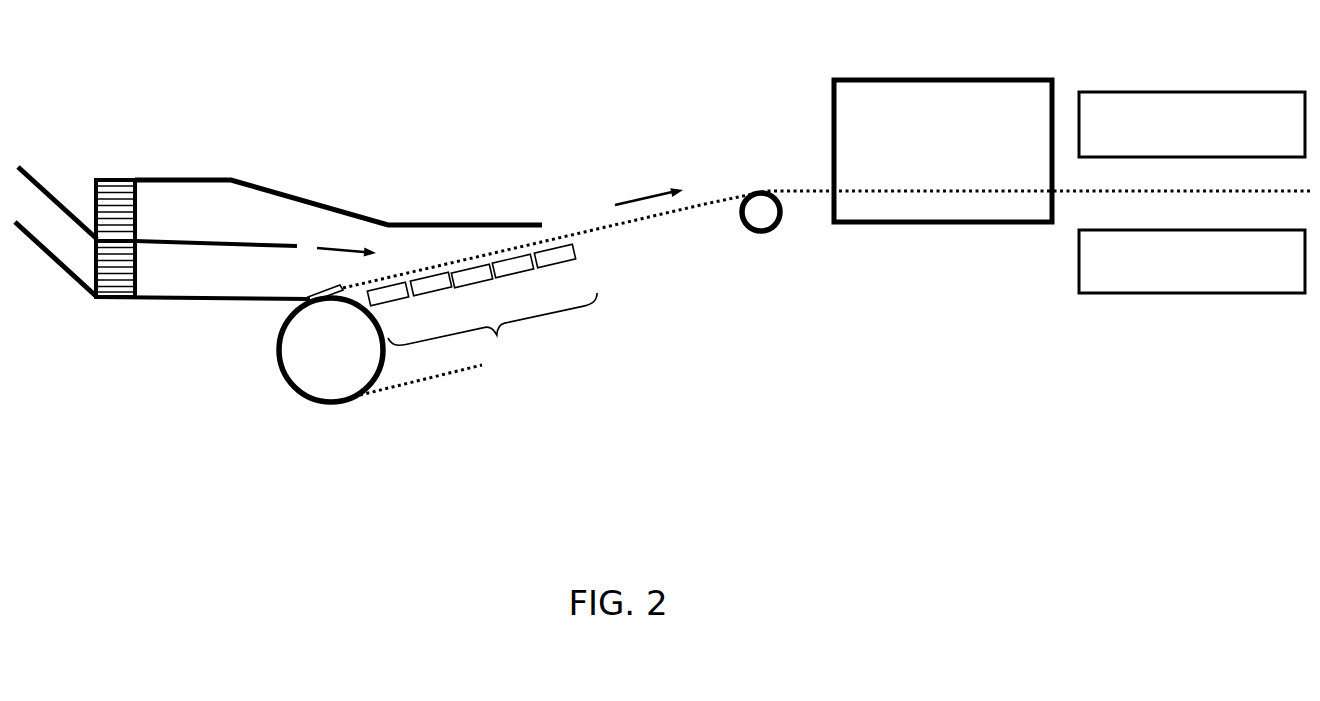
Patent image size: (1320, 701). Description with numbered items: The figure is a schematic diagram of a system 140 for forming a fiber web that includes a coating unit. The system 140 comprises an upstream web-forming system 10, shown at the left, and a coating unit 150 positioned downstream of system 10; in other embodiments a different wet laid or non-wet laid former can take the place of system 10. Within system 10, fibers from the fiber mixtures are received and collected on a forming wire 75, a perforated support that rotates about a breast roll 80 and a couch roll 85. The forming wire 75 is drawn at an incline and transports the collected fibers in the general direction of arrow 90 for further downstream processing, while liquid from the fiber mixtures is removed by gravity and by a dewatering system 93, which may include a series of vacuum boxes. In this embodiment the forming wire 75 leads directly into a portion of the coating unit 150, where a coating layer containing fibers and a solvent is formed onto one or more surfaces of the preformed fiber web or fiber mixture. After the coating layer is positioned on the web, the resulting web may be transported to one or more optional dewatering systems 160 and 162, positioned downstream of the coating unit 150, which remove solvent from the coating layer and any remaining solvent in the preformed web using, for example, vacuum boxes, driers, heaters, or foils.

The system 140 is at (199, 55).
The system 10 is at (55, 142).
The forming wire 75 is at (698, 203).
The breast roll 80 is at (386, 348).
The couch roll 85 is at (755, 234).
The arrow 90 is at (475, 282).
The dewatering system 93 is at (480, 344).
The coating unit 150 is at (928, 130).
The dewatering system 160 is at (1172, 140).
The dewatering system 162 is at (1175, 278).